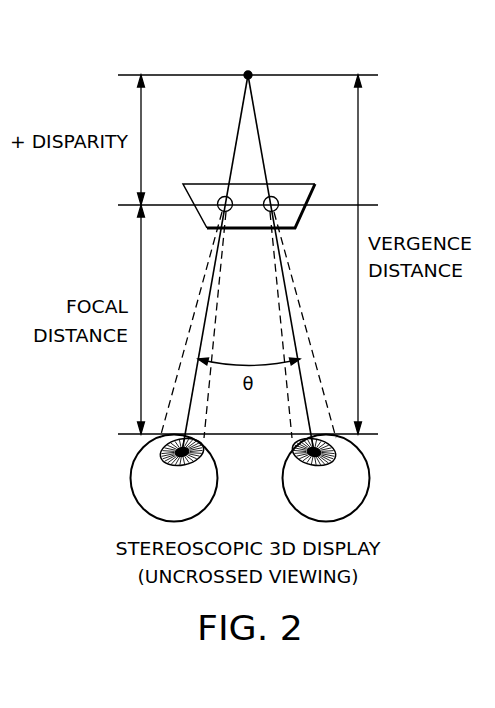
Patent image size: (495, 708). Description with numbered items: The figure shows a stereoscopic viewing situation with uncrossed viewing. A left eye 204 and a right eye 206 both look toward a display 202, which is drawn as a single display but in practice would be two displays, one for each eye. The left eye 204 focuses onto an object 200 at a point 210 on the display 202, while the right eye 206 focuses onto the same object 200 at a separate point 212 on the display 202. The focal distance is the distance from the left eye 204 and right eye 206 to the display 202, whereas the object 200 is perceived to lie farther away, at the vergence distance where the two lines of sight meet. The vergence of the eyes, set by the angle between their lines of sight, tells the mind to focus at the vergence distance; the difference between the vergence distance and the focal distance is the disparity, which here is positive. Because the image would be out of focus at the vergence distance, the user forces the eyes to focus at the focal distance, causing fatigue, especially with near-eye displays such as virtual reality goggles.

The object 200 is at (248, 72).
The display 202 is at (290, 183).
The left eye 204 is at (131, 480).
The right eye 206 is at (369, 480).
The point 210 is at (220, 213).
The point 212 is at (276, 213).